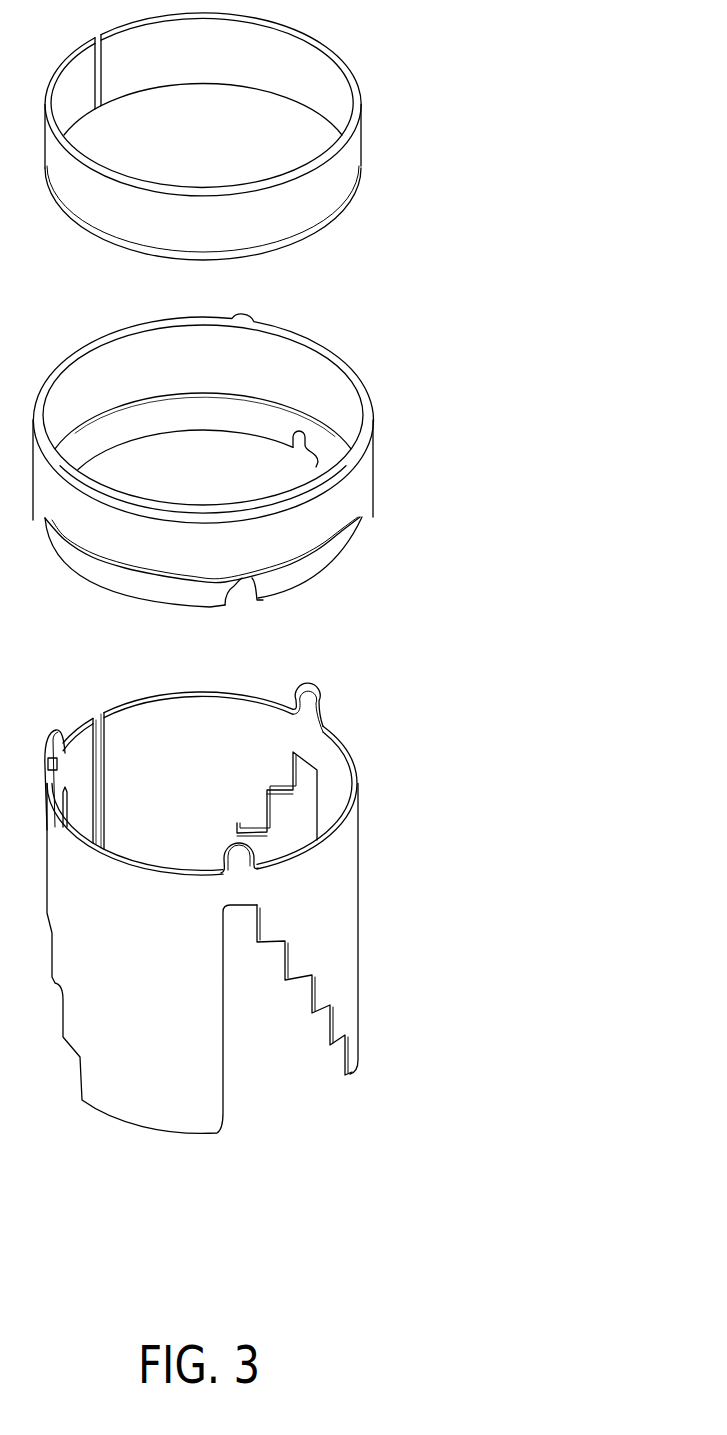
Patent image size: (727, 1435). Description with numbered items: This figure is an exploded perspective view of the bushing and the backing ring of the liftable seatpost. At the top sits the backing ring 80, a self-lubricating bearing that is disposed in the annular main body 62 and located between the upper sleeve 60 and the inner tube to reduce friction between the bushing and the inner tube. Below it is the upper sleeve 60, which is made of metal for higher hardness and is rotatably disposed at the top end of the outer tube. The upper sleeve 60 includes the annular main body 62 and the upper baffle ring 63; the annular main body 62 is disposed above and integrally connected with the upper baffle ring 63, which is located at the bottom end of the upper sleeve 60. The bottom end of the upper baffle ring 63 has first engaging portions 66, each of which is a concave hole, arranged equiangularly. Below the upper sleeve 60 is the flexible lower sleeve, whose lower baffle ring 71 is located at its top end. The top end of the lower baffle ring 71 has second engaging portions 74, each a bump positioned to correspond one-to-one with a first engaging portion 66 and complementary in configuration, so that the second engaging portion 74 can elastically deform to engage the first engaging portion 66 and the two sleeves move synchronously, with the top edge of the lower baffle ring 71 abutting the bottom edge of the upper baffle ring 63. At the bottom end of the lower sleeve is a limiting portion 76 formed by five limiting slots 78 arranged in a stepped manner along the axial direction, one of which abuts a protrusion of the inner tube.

The upper sleeve 60 is at (313, 486).
The annular main body 62 is at (350, 482).
The upper baffle ring 63 is at (290, 585).
The first engaging portion 66 is at (233, 584).
The lower baffle ring 71 is at (280, 1013).
The second engaging portion 74 is at (242, 853).
The limiting portion 76 is at (307, 1124).
The limiting slot 78 is at (237, 922).
The backing ring 80 is at (424, 91).